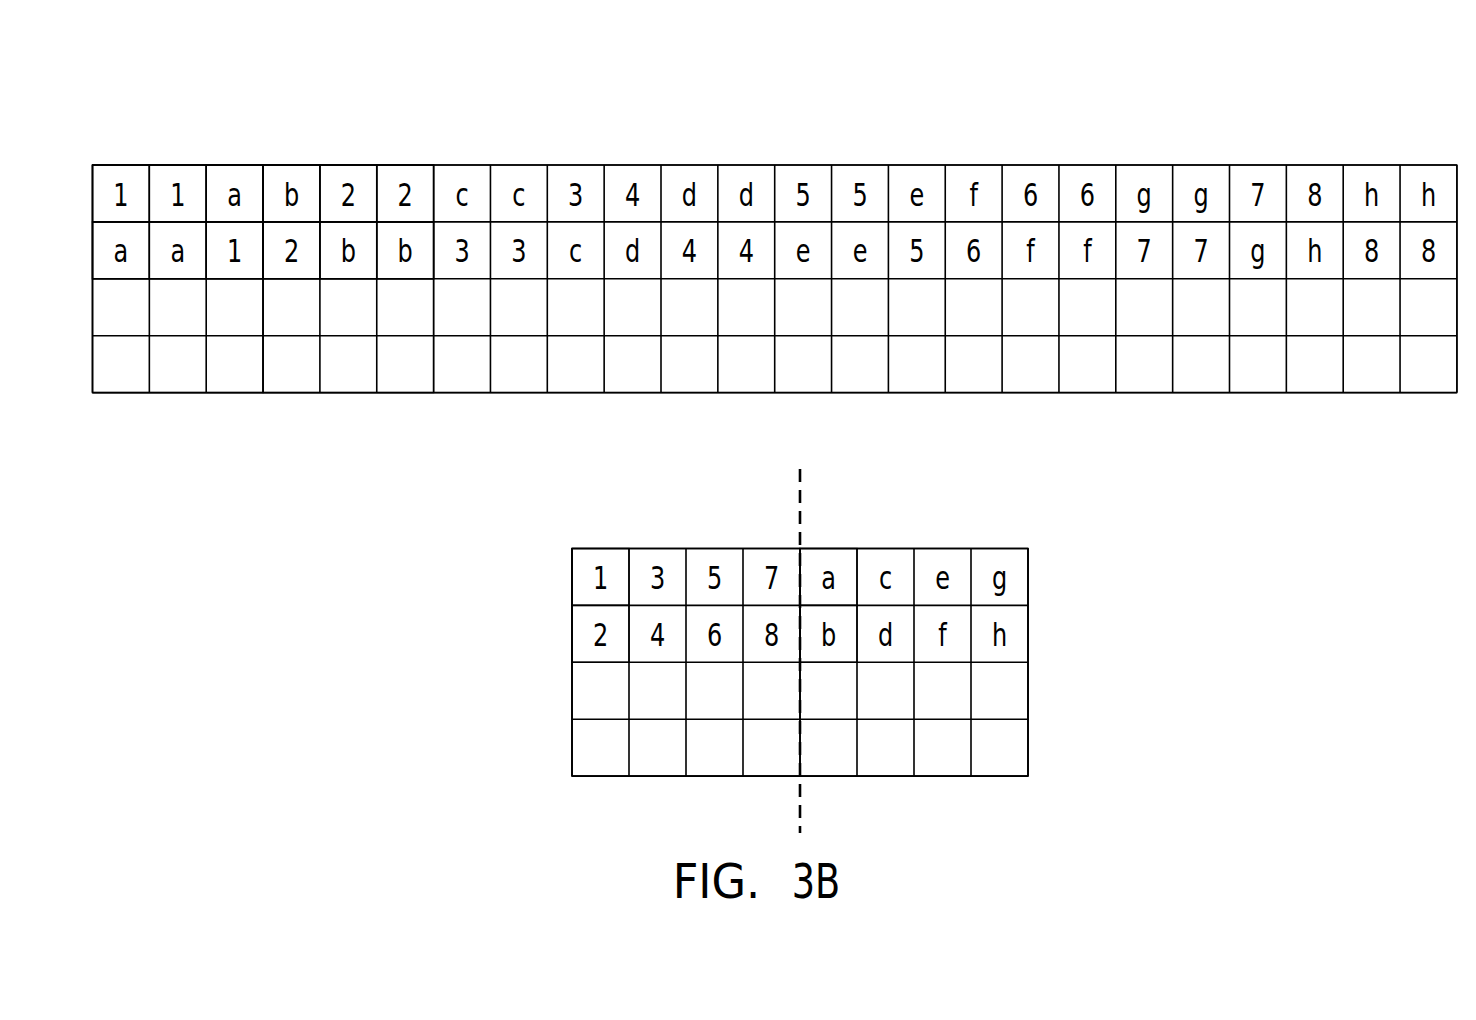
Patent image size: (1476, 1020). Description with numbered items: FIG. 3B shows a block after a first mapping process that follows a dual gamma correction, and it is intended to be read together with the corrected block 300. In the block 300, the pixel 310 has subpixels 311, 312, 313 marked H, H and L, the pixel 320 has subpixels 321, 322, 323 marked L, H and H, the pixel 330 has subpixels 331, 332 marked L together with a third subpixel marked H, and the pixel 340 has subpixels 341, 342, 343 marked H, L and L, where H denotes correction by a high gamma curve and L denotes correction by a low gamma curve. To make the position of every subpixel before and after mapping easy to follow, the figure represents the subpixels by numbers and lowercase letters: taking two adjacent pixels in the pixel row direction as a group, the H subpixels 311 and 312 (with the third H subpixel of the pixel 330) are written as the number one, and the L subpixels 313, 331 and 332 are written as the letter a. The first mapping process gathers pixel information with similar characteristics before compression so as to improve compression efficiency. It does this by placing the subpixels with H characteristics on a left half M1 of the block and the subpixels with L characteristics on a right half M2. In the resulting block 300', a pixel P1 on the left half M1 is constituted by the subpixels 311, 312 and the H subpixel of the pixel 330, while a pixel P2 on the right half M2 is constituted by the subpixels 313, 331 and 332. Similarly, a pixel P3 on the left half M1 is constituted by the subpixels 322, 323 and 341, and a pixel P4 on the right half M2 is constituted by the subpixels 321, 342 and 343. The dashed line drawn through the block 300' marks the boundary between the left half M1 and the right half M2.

The block 300 is at (775, 206).
The pixel 310 is at (237, 90).
The subpixel 311 is at (123, 177).
The subpixel 312 is at (178, 177).
The subpixel 313 is at (237, 177).
The pixel 320 is at (408, 90).
The subpixel 321 is at (293, 177).
The subpixel 322 is at (350, 177).
The subpixel 323 is at (408, 177).
The pixel 330 is at (101, 468).
The subpixel 331 is at (128, 268).
The subpixel 332 is at (180, 268).
The pixel 340 is at (408, 468).
The subpixel 341 is at (296, 268).
The subpixel 342 is at (350, 268).
The subpixel 343 is at (408, 268).
The block after the first mapping process 300' is at (939, 630).
The left half M1 is at (678, 494).
The right half M2 is at (1005, 494).
The pixel P1 is at (601, 548).
The pixel P2 is at (826, 548).
The pixel P3 is at (572, 633).
The pixel P4 is at (828, 663).